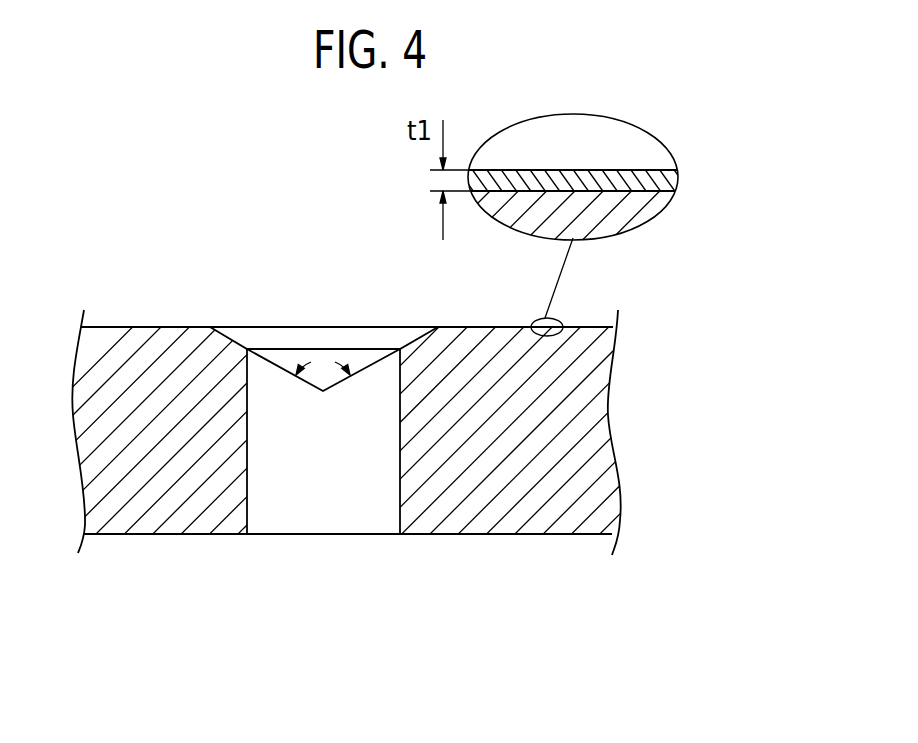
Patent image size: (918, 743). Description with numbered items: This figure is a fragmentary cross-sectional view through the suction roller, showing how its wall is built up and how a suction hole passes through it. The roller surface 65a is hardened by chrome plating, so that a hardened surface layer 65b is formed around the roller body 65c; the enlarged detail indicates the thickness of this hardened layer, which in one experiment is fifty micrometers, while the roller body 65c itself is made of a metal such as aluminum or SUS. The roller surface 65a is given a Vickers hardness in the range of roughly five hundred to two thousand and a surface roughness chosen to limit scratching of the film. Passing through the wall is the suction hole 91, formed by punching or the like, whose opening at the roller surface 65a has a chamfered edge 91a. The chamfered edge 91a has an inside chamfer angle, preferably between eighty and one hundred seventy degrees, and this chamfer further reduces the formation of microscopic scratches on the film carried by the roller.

The roller surface 65a is at (152, 327).
The hardened surface layer 65b is at (667, 182).
The roller body 65c is at (618, 220).
The suction hole 91 is at (247, 488).
The chamfered edge 91a is at (233, 327).